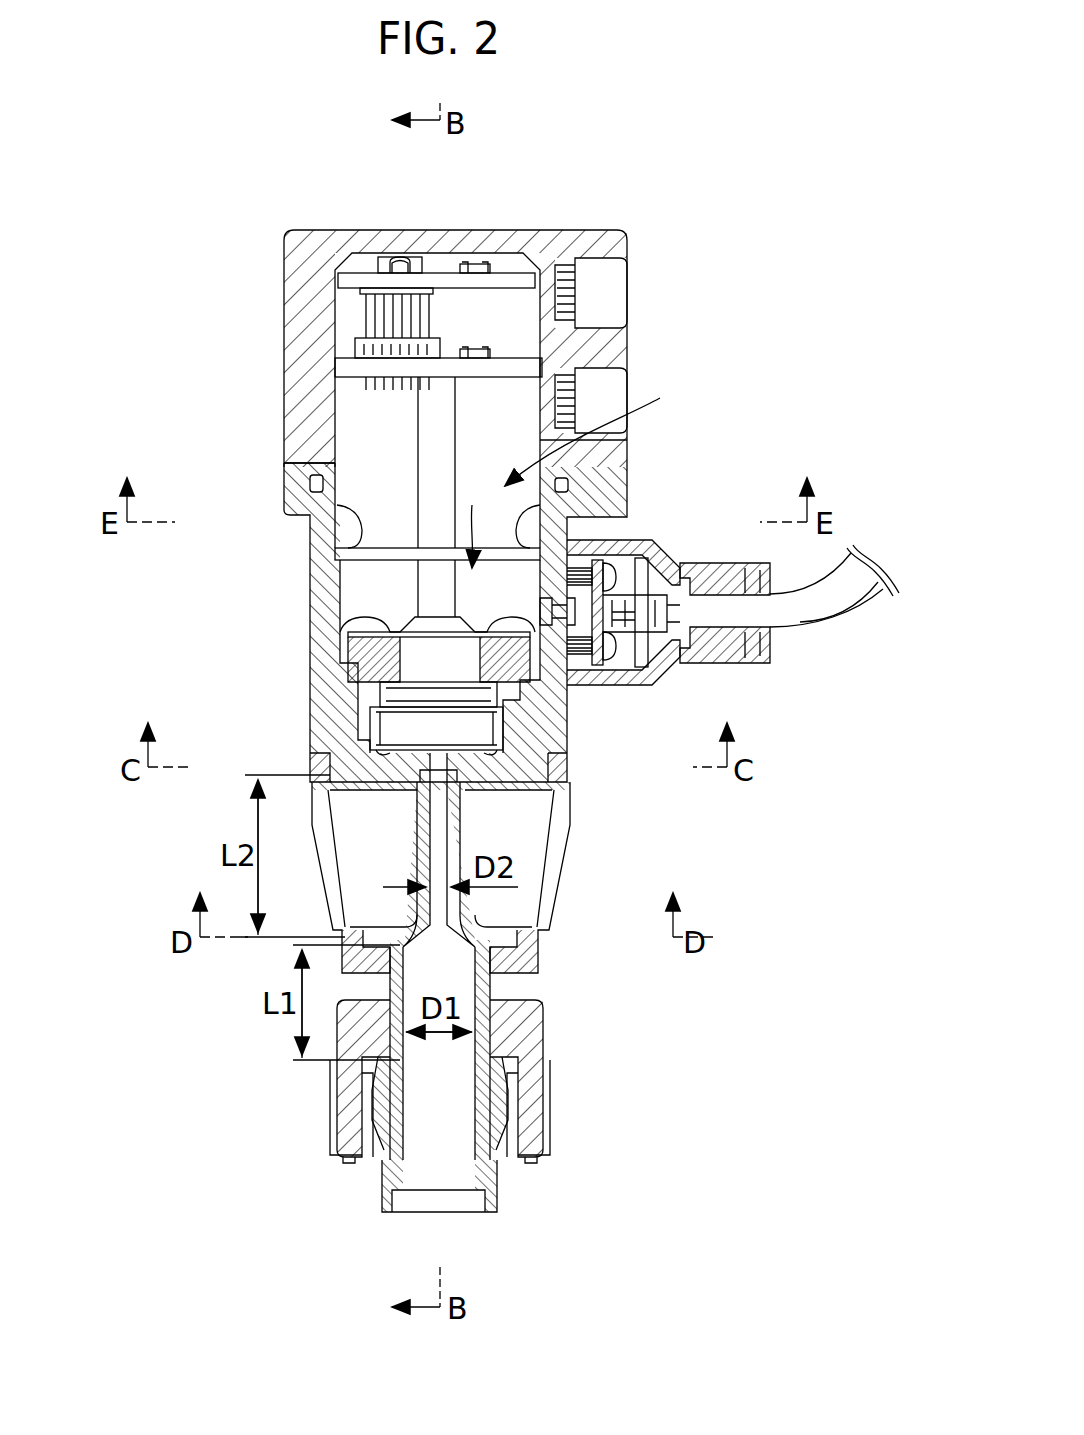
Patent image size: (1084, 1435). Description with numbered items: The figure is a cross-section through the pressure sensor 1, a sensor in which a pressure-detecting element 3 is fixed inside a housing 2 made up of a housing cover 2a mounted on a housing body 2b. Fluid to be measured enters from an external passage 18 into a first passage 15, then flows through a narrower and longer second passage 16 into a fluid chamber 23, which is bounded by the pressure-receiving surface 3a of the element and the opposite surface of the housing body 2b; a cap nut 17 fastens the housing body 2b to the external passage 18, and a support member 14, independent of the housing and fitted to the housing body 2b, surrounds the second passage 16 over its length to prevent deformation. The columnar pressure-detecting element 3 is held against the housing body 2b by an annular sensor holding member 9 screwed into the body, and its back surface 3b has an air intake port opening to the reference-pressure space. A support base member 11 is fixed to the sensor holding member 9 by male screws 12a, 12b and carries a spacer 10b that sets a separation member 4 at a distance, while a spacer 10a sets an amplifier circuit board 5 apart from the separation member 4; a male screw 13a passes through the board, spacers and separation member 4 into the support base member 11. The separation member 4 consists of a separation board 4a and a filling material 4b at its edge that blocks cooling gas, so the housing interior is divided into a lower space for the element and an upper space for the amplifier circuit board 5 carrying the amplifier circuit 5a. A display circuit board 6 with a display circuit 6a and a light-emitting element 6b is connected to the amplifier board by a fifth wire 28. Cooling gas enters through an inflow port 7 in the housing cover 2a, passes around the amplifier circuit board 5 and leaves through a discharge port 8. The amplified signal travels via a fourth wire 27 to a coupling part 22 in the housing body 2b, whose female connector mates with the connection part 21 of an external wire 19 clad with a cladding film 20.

The pressure sensor 1 is at (668, 187).
The housing 2 is at (690, 422).
The housing cover 2a is at (627, 443).
The housing body 2b is at (627, 492).
The pressure-detecting element 3 is at (487, 735).
The pressure-receiving surface 3a is at (470, 772).
The back surface 3b is at (415, 700).
The separation member 4 is at (232, 438).
The separation board 4a is at (383, 548).
The filling material 4b is at (345, 512).
The amplifier circuit board 5 is at (478, 365).
The amplifier circuit 5a is at (540, 352).
The display circuit board 6 is at (515, 285).
The display circuit 6a is at (475, 268).
The light-emitting element 6b is at (400, 262).
The inflow port 7 is at (632, 385).
The discharge port 8 is at (632, 280).
The sensor holding member 9 is at (567, 698).
The spacer 10a is at (430, 410).
The spacer 10b is at (420, 575).
The support base member 11 is at (348, 655).
The male screw 12a is at (435, 607).
The male screw 12b is at (345, 634).
The male screw 13a is at (450, 350).
The support member 14 is at (555, 870).
The first passage 15 is at (440, 975).
The second passage 16 is at (440, 835).
The cap nut 17 is at (545, 1040).
The external passage 18 is at (445, 1180).
The external wire 19 is at (810, 615).
The cladding film 20 is at (858, 608).
The connection part 21 is at (688, 548).
The coupling part 22 is at (620, 655).
The fluid chamber 23 is at (420, 750).
The fourth wire 27 is at (570, 540).
The fifth wire 28 is at (365, 315).